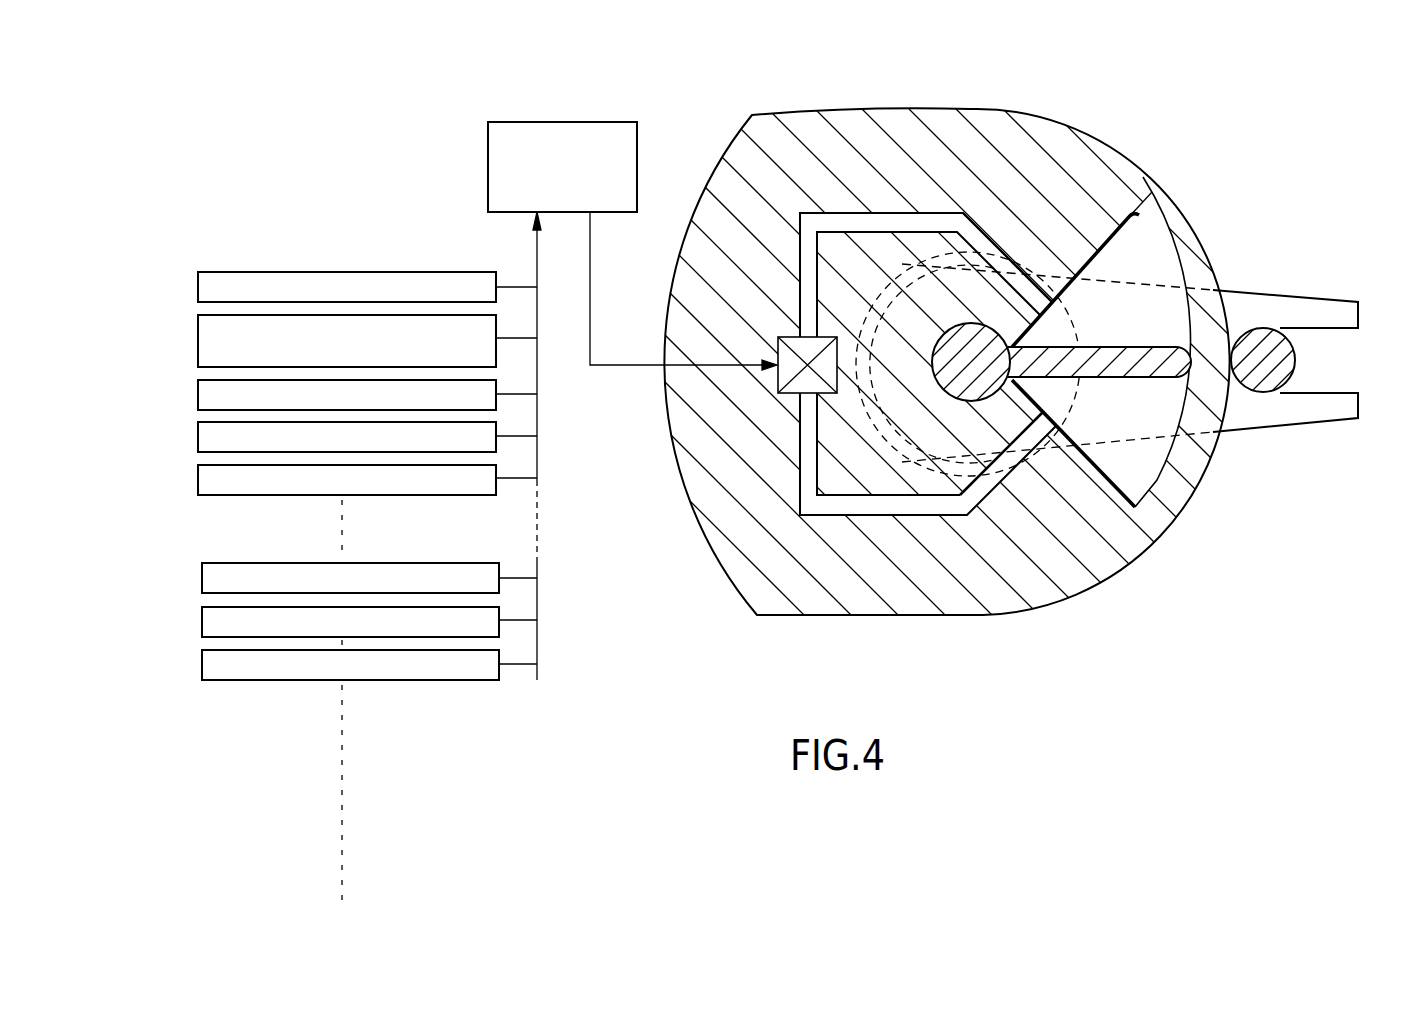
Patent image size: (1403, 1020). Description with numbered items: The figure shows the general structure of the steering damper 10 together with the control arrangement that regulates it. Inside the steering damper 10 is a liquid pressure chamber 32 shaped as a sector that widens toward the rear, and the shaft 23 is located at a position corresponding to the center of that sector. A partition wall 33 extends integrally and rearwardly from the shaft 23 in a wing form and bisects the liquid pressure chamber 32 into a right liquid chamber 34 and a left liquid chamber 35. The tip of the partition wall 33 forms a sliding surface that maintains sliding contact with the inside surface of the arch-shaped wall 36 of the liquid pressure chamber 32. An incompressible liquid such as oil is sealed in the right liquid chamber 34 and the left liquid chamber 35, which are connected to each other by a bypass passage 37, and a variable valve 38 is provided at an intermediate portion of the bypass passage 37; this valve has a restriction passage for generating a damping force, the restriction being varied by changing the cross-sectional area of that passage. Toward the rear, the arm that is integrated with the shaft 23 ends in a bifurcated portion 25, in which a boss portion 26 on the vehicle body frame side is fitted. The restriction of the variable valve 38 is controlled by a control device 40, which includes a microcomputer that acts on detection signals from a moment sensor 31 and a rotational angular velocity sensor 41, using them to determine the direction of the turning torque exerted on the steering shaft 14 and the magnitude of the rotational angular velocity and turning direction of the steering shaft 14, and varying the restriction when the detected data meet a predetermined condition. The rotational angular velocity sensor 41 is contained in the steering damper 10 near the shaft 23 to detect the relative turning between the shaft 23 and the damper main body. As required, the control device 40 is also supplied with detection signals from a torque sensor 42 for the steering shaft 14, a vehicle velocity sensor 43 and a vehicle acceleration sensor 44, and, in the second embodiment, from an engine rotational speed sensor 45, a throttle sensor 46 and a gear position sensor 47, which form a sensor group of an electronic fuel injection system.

The steering damper 10 is at (712, 145).
The steering shaft 14 is at (1013, 256).
The shaft 23 is at (948, 388).
The bifurcated portion 25 is at (1320, 299).
The boss portion 26 is at (1284, 373).
The moment sensor 31 is at (433, 272).
The liquid pressure chamber 32 is at (1168, 488).
The partition wall 33 is at (1128, 372).
The right liquid chamber 34 is at (1132, 237).
The left liquid chamber 35 is at (1098, 455).
The arch-shaped wall 36 is at (1160, 256).
The bypass passage 37 is at (893, 224).
The variable valve 38 is at (766, 353).
The control device 40 is at (519, 122).
The rotational angular velocity sensor 41 is at (497, 325).
The torque sensor 42 is at (497, 385).
The vehicle velocity sensor 43 is at (497, 433).
The vehicle acceleration sensor 44 is at (290, 497).
The engine rotational speed sensor 45 is at (467, 563).
The throttle sensor 46 is at (499, 613).
The gear position sensor 47 is at (394, 682).